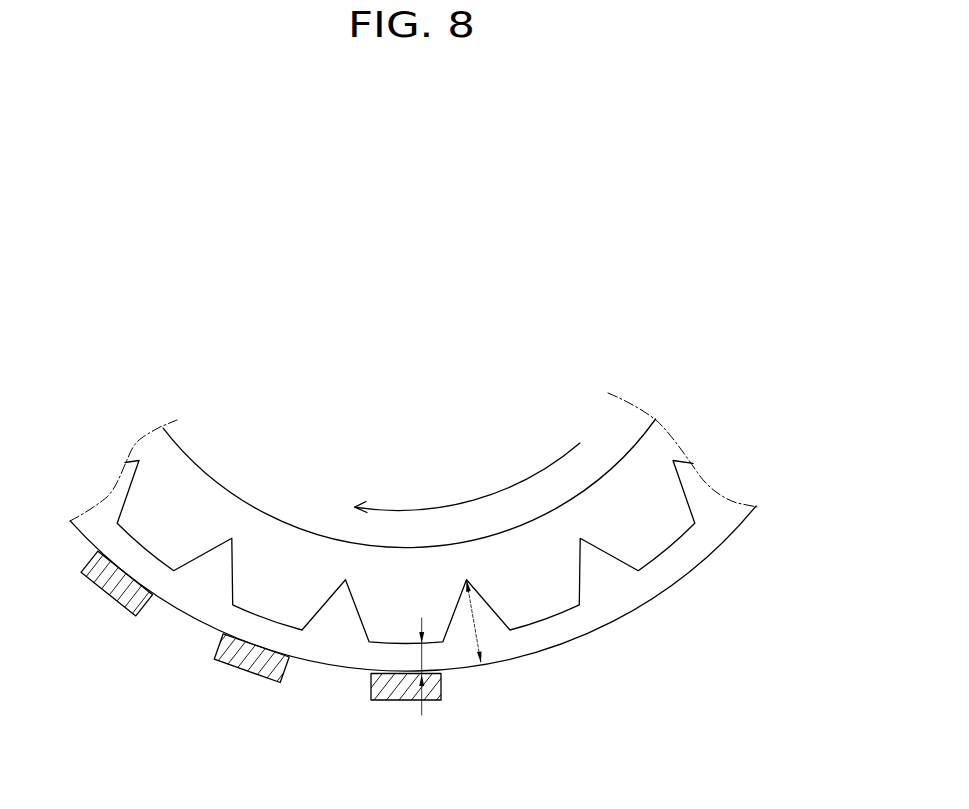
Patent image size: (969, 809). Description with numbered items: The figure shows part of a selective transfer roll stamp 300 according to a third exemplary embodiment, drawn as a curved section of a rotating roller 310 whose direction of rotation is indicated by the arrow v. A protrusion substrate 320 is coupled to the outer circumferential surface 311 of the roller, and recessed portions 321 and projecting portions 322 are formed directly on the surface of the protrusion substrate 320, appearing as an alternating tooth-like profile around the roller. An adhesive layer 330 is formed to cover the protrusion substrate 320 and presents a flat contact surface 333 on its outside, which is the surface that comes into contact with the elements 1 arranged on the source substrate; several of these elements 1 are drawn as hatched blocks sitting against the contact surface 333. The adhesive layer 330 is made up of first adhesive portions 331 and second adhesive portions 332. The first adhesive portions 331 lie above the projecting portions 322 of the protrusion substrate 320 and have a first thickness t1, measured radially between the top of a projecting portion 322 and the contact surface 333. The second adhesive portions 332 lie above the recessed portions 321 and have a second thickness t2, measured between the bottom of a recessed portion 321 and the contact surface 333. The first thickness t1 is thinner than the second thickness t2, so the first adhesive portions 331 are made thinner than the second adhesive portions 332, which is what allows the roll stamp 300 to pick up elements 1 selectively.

The selective transfer roll stamp 300 is at (567, 326).
The rotating roller 310 is at (622, 418).
The protrusion substrate 320 is at (652, 463).
The outer circumferential surface 311 is at (672, 487).
The recessed portion 321 is at (329, 623).
The projecting portion 322 is at (383, 642).
The adhesive layer 330 is at (708, 515).
The first adhesive portion 331 is at (438, 649).
The second adhesive portion 332 is at (283, 681).
The flat contact surface 333 is at (603, 627).
The element 1 is at (118, 601).
The first thickness t1 is at (440, 699).
The second thickness t2 is at (478, 634).
The rotation direction v is at (476, 502).